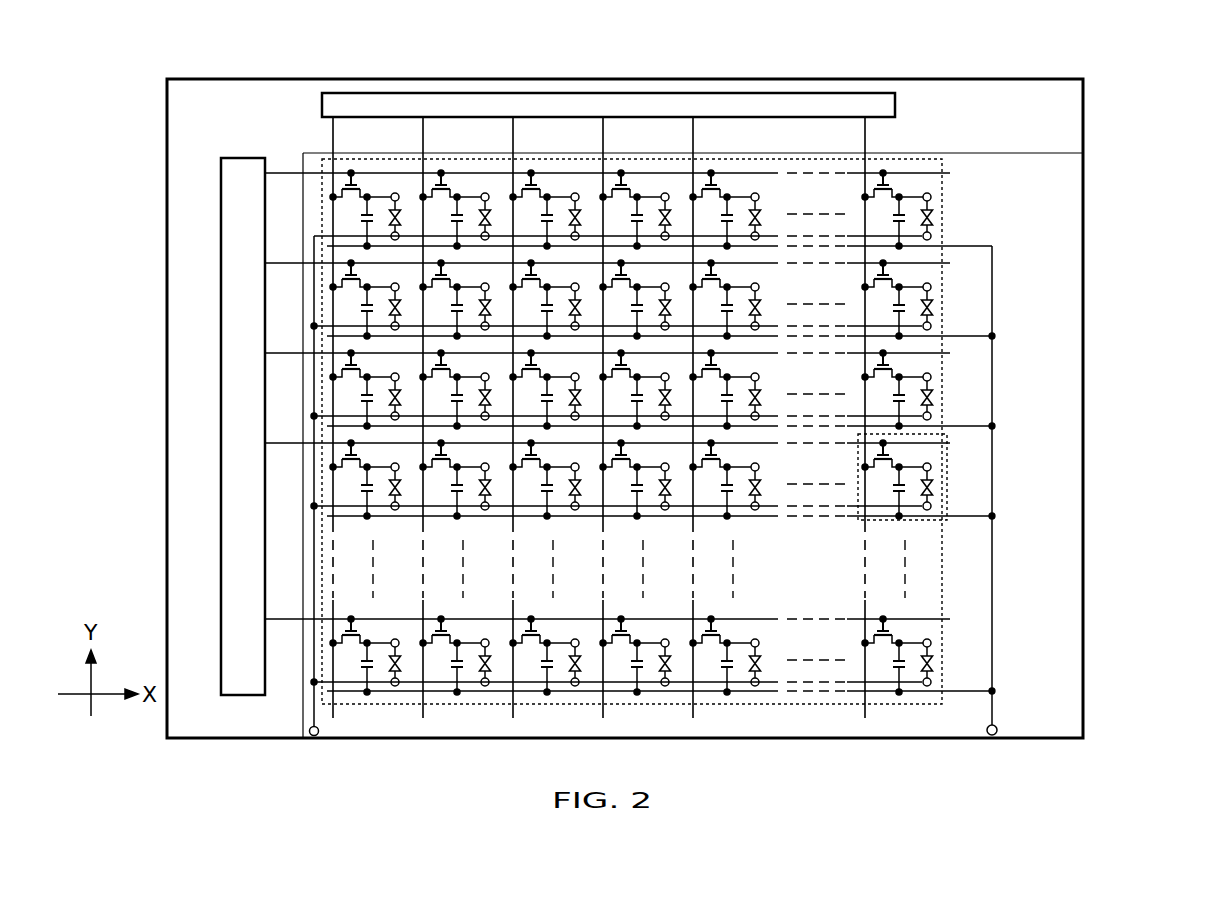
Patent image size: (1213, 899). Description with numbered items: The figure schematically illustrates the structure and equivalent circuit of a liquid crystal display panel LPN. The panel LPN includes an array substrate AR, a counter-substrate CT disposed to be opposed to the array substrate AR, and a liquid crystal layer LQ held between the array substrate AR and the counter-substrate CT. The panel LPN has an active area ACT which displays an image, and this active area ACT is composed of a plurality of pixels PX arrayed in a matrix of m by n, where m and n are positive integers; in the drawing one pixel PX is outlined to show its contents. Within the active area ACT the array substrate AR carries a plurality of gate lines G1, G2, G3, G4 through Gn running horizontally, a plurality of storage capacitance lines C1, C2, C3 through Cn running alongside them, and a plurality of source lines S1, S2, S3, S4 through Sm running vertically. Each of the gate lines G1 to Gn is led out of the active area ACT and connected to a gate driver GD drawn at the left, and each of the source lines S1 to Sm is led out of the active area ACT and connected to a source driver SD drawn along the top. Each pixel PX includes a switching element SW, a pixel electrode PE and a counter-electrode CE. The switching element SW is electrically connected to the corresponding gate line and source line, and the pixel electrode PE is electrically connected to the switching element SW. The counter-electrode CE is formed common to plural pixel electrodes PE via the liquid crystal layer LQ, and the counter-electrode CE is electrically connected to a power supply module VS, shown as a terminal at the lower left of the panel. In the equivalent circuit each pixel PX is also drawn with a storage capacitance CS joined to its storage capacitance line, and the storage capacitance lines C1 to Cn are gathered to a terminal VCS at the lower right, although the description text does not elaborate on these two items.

The liquid crystal display panel LPN is at (1122, 47).
The counter-substrate CT is at (1050, 153).
The array substrate AR is at (238, 727).
The active area ACT is at (941, 278).
The source driver SD is at (897, 105).
The gate driver GD is at (221, 548).
The gate line G1 is at (279, 172).
The gate line G2 is at (279, 262).
The gate line G3 is at (279, 352).
The gate line G4 is at (279, 442).
The gate line Gn is at (279, 618).
The source line S1 is at (336, 136).
The source line S2 is at (426, 136).
The source line S3 is at (516, 136).
The source line S4 is at (606, 136).
The source line Sm is at (868, 136).
The storage capacitance line C1 is at (966, 244).
The storage capacitance line C2 is at (966, 334).
The storage capacitance line C3 is at (966, 424).
The storage capacitance line Cn is at (967, 690).
The power supply module VS is at (318, 735).
The storage capacitance voltage supply VCS is at (997, 726).
The pixel PX is at (947, 522).
The switching element SW is at (857, 458).
The storage capacitance CS is at (873, 488).
The pixel electrode PE is at (931, 467).
The liquid crystal layer LQ is at (933, 487).
The counter-electrode CE is at (931, 506).